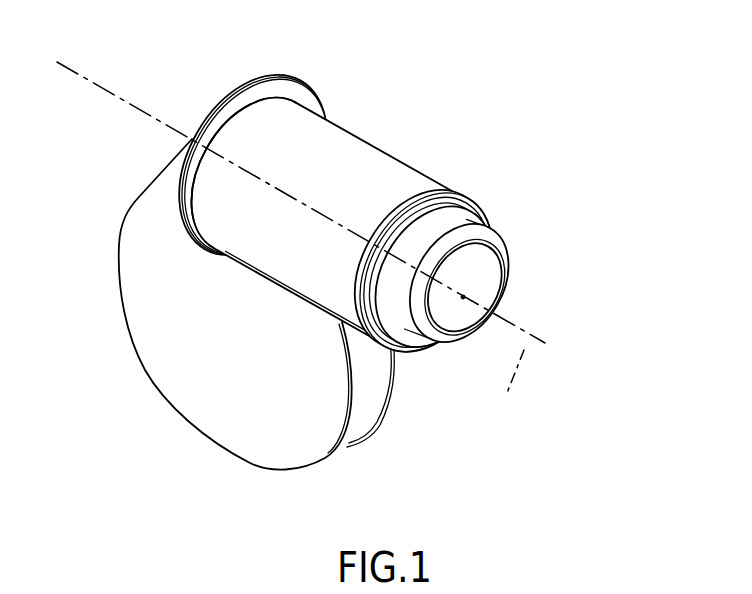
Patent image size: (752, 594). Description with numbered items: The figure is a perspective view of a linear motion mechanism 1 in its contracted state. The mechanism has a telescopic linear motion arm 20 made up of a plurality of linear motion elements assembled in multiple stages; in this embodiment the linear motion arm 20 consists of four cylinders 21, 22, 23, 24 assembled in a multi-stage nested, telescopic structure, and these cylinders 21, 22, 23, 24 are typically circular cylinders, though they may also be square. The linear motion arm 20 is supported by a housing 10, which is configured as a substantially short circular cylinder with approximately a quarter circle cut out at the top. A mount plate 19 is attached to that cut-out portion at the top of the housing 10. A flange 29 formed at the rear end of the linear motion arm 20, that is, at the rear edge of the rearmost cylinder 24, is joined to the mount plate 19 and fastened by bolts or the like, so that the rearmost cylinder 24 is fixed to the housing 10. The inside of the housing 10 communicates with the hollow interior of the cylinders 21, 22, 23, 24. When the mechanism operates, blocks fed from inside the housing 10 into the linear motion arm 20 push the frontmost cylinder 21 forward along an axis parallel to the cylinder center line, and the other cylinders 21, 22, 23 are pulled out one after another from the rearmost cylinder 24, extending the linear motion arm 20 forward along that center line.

The linear motion mechanism 1 is at (358, 241).
The housing 10 is at (171, 304).
The mount plate 19 is at (270, 73).
The linear motion arm 20 is at (362, 128).
The frontmost cylinder 21 is at (503, 272).
The cylinder 22 is at (492, 236).
The cylinder 23 is at (473, 205).
The rearmost cylinder 24 is at (412, 165).
The flange 29 is at (293, 102).